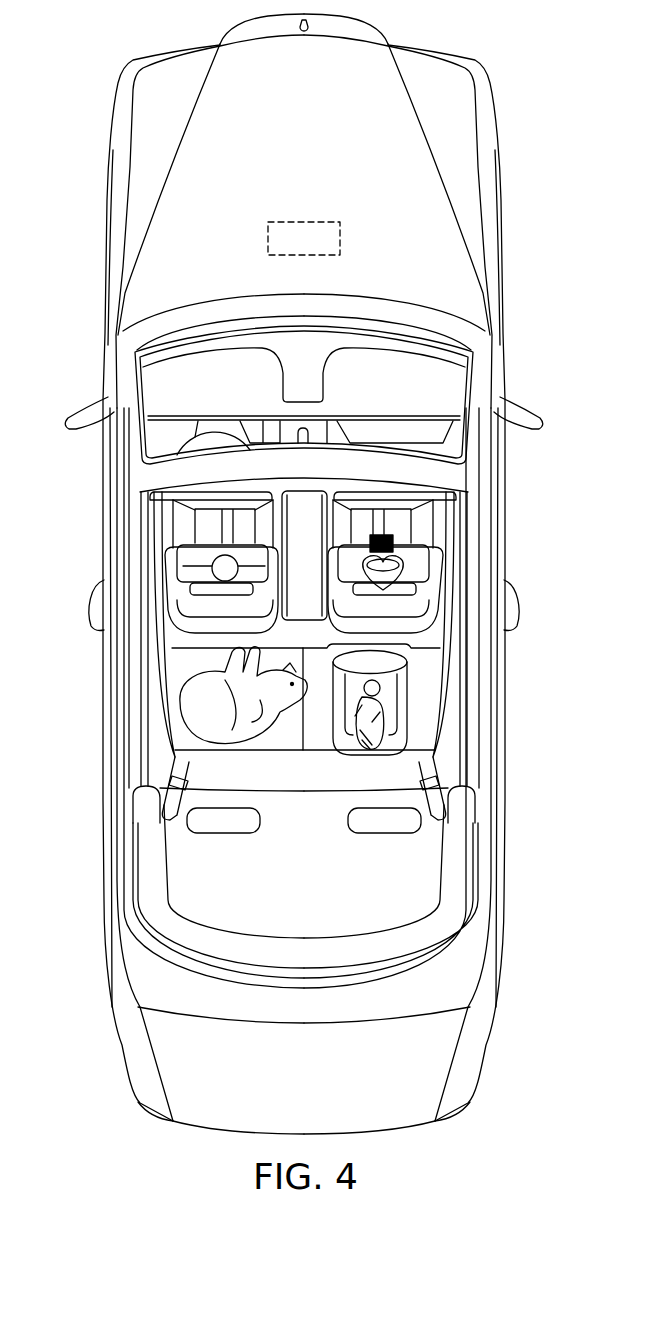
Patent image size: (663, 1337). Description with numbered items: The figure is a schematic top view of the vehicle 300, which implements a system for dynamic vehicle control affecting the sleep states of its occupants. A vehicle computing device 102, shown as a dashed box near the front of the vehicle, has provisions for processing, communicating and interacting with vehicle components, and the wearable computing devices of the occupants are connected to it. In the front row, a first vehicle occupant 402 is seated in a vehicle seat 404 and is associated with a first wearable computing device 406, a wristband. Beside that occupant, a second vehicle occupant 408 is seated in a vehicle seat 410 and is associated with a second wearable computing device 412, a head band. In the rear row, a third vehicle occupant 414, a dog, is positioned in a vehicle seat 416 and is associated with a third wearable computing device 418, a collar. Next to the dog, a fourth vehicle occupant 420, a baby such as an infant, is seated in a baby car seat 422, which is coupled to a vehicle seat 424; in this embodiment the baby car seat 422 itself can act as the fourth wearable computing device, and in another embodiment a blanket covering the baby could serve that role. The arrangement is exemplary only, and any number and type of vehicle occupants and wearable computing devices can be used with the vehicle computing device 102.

The vehicle 300 is at (489, 47).
The vehicle computing device (VCD) 102 is at (340, 236).
The first vehicle occupant 402 is at (183, 557).
The vehicle seat 404 is at (177, 590).
The first wearable computing device 406 is at (193, 512).
The second vehicle occupant 408 is at (420, 538).
The vehicle seat 410 is at (430, 590).
The second wearable computing device 412 is at (397, 568).
The third vehicle occupant 414 is at (187, 705).
The vehicle seat 416 is at (172, 655).
The third wearable computing device 418 is at (187, 737).
The fourth vehicle occupant 420 is at (380, 720).
The baby car seat 422 is at (400, 662).
The vehicle seat 424 is at (423, 702).